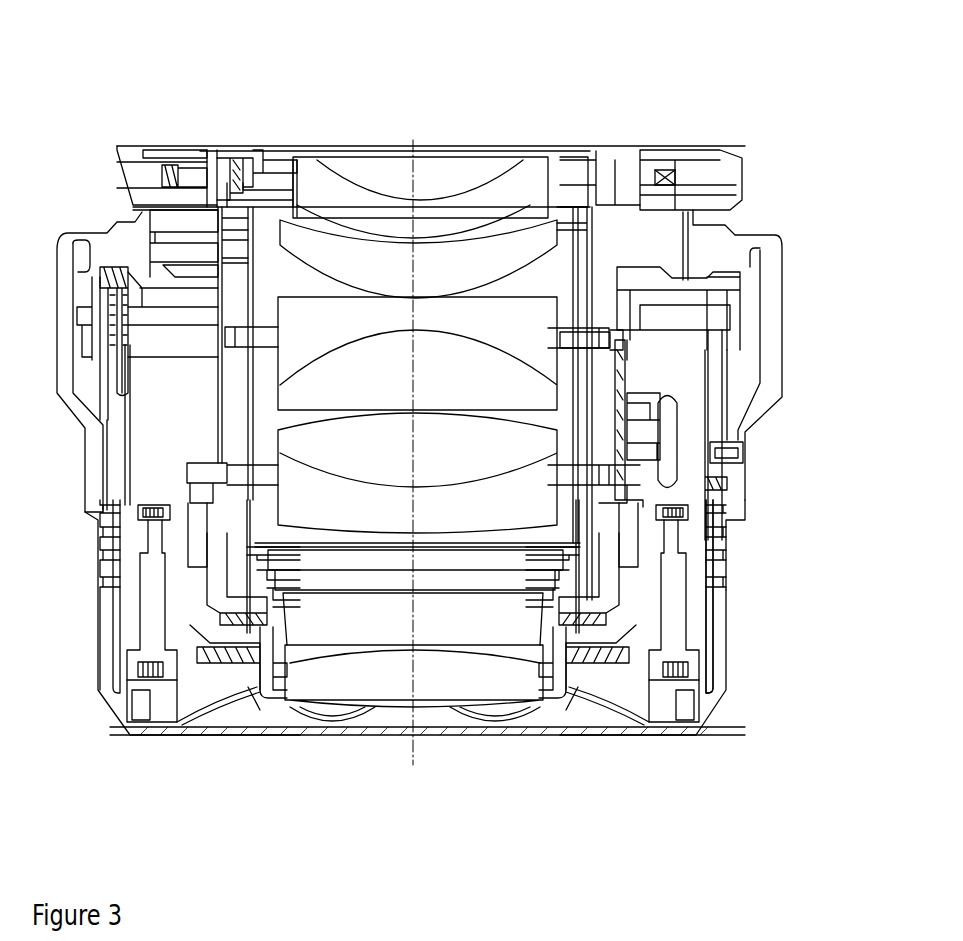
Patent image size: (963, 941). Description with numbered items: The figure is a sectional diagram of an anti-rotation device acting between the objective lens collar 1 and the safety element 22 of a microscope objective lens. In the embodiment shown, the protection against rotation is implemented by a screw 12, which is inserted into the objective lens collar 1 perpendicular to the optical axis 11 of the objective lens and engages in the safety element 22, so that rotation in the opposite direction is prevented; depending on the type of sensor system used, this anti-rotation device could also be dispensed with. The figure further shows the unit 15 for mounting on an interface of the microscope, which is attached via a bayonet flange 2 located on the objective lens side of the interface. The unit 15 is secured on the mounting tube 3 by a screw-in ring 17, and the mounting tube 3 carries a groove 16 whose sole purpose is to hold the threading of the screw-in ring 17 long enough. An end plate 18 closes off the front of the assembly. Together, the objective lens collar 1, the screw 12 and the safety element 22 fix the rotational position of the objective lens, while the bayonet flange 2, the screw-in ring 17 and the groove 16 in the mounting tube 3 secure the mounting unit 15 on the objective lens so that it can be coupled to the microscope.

The objective lens collar 1 is at (772, 277).
The bayonet flange 2 is at (718, 150).
The mounting tube 3 is at (600, 365).
The optical axis 11 is at (417, 648).
The screw 12 is at (750, 459).
The unit for mounting on an interface of the microscope 15 is at (778, 152).
The groove in mounting tube 16 is at (656, 160).
The screw-in ring 17 is at (600, 150).
The end plate 18 is at (258, 146).
The safety element 22 is at (725, 592).